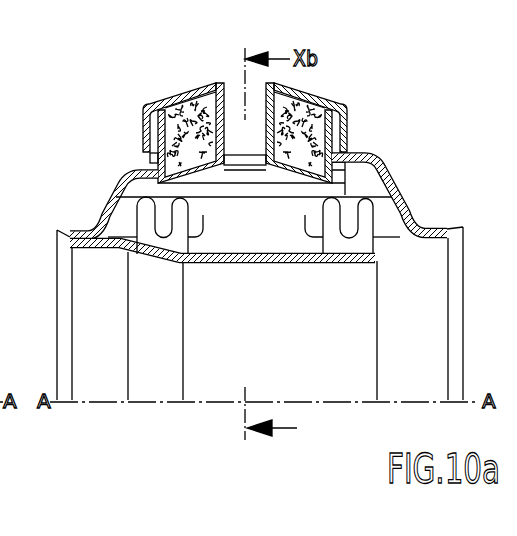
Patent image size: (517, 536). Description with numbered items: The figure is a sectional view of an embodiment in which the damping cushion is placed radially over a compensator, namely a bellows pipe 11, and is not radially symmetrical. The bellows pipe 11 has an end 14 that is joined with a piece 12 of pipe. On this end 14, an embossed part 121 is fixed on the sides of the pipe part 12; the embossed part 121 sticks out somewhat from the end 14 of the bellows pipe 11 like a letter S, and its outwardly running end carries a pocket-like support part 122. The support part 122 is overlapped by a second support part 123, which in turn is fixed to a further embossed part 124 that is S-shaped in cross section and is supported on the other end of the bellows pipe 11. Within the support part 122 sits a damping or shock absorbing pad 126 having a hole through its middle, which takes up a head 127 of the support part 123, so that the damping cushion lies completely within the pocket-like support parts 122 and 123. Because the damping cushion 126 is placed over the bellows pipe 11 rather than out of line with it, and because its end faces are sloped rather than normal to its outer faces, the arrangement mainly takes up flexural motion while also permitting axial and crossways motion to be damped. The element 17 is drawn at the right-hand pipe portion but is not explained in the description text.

The head 127 is at (263, 104).
The damping pad 126 is at (310, 106).
The support part 123 is at (146, 112).
The pocket-like support part 122 is at (158, 153).
The embossed part 121 is at (118, 197).
The embossed part 124 is at (382, 166).
The bellows pipe 11 is at (368, 200).
The piece of pipe 12 is at (303, 262).
The end 14 is at (122, 236).
The pipe section 17 is at (402, 238).